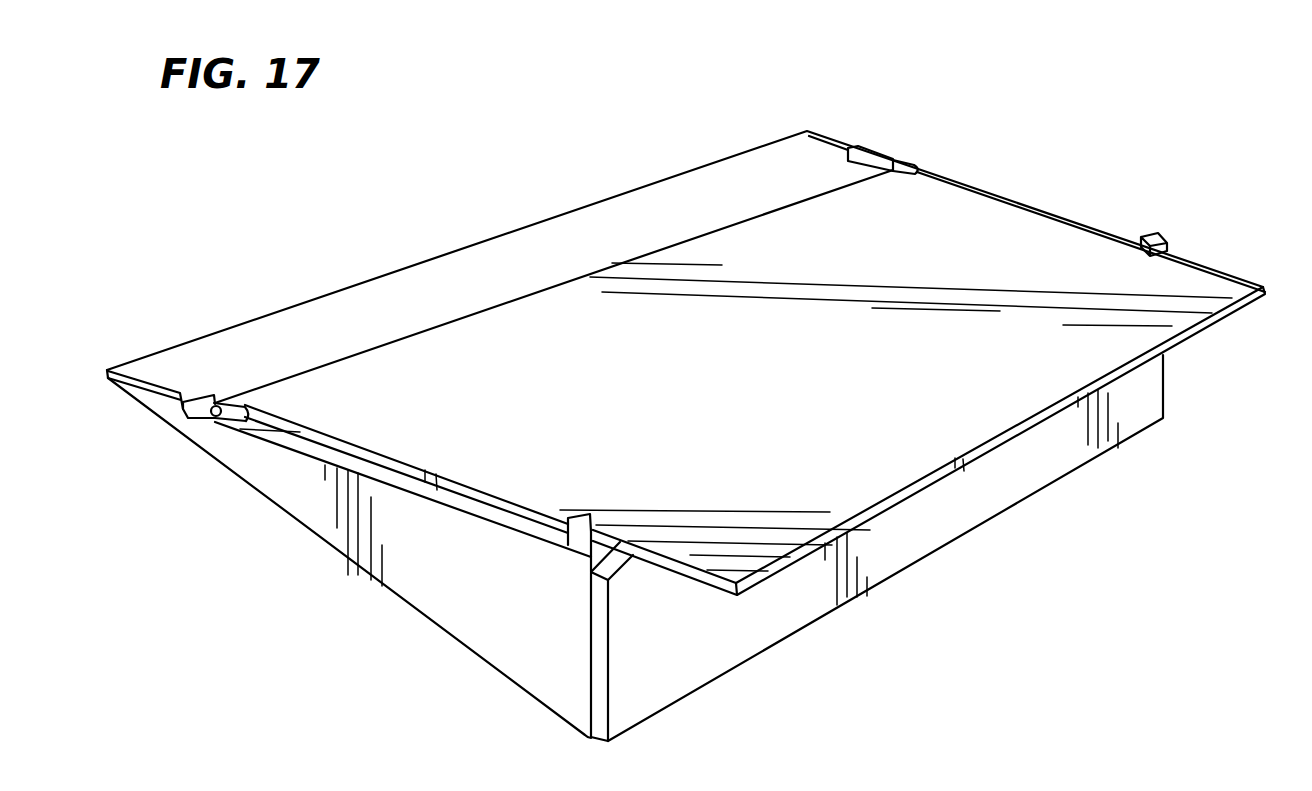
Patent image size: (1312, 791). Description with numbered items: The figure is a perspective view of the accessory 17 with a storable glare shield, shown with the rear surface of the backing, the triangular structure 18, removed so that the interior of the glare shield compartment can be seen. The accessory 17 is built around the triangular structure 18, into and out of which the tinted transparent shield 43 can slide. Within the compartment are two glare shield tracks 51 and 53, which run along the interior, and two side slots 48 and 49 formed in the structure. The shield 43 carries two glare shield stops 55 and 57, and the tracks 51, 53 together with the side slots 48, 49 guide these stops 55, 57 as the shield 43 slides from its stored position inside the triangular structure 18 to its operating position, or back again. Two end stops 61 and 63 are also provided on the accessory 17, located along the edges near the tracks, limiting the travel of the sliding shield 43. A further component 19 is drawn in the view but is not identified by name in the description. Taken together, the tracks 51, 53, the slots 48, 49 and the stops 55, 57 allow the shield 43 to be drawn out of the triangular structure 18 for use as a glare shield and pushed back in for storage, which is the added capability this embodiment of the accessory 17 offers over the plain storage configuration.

The accessory 17 is at (582, 146).
The triangular structure 18 is at (404, 600).
The side wall 19 is at (778, 644).
The tinted transparent shield 43 is at (1233, 271).
The side slot 48 is at (558, 550).
The side slot 49 is at (866, 141).
The glare shield track 51 is at (197, 405).
The glare shield track 53 is at (880, 160).
The glare shield stop 55 is at (218, 420).
The glare shield stop 57 is at (917, 168).
The end stop 61 is at (588, 527).
The end stop 63 is at (1160, 237).